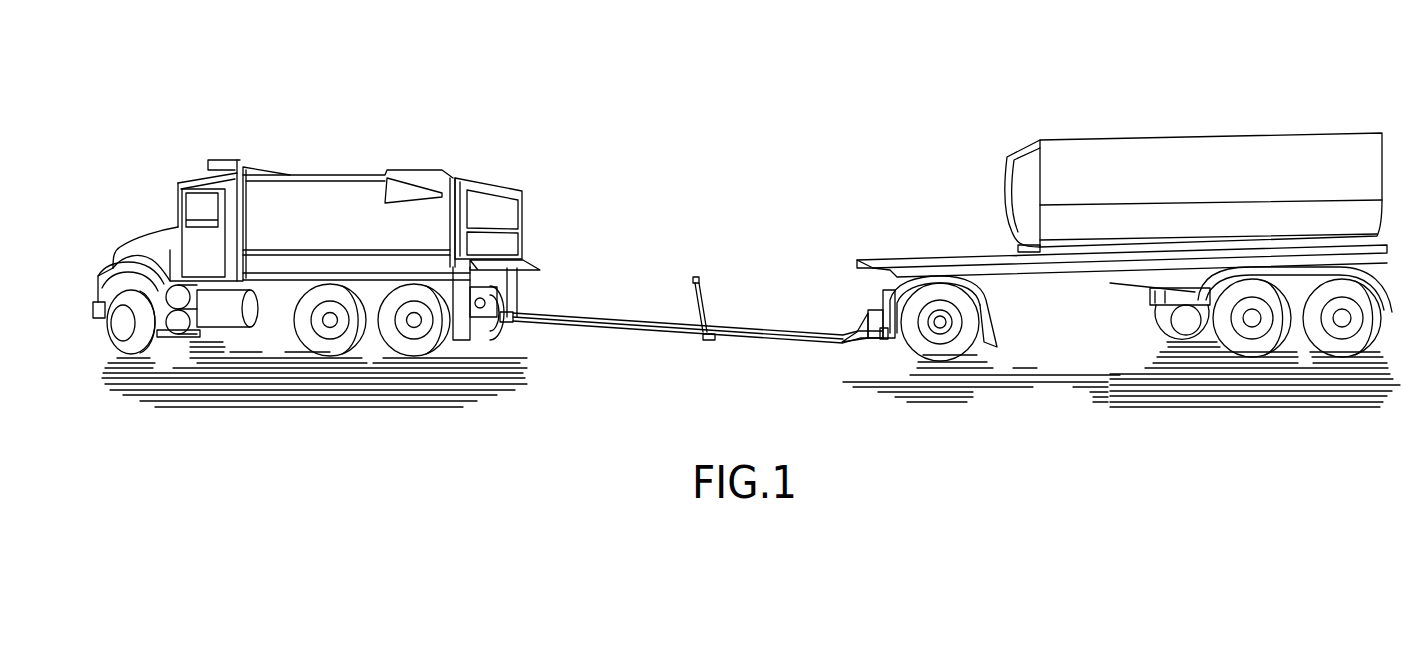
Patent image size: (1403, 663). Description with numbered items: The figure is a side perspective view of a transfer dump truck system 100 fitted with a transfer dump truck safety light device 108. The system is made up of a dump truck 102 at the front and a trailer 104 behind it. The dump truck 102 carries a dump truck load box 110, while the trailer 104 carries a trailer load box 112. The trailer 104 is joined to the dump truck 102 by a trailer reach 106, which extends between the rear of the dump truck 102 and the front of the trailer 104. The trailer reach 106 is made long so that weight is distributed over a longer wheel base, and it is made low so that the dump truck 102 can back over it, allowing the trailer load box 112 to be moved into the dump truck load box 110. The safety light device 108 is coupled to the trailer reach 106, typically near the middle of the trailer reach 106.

The transfer dump truck system 100 is at (428, 104).
The dump truck 102 is at (521, 188).
The trailer 104 is at (1007, 181).
The trailer reach 106 is at (641, 334).
The transfer dump truck safety light device 108 is at (697, 278).
The dump truck load box 110 is at (356, 233).
The trailer load box 112 is at (1266, 187).